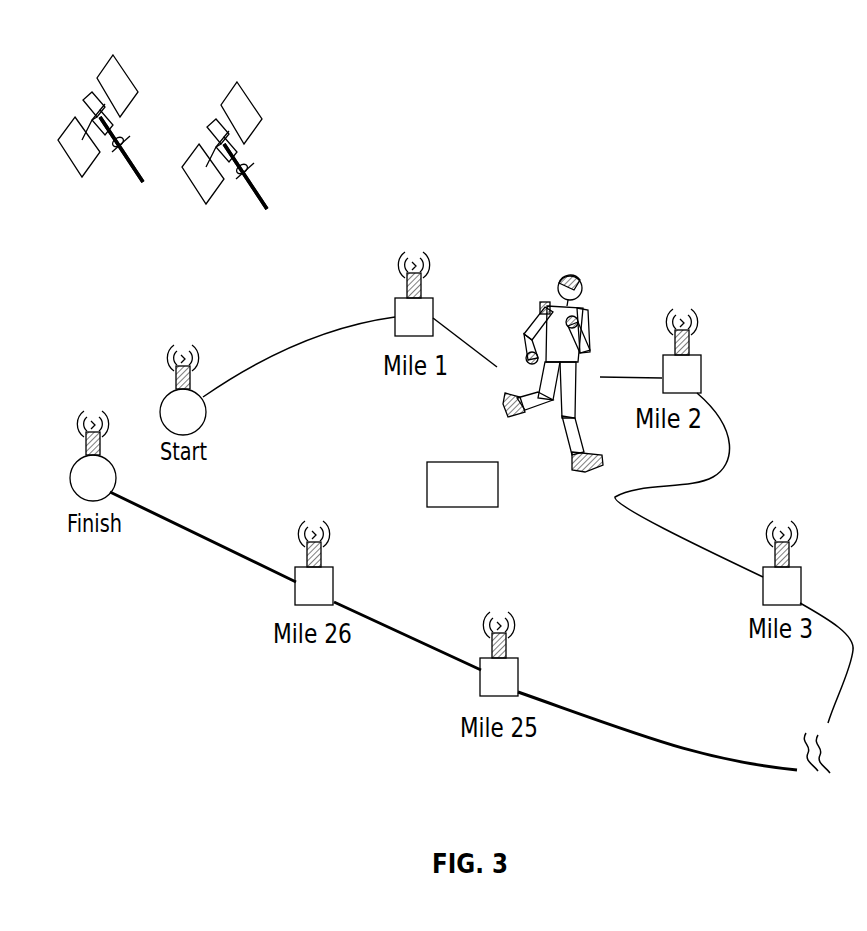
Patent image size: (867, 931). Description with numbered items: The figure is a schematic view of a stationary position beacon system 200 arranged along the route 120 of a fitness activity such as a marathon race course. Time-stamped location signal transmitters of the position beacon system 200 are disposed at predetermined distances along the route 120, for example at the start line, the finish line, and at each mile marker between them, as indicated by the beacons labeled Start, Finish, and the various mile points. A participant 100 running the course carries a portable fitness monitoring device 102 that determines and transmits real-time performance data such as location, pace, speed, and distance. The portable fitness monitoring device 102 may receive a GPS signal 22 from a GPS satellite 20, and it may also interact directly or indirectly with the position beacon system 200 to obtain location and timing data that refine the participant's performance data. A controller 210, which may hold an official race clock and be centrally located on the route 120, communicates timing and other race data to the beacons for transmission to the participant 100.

The GPS satellite 20 is at (125, 82).
The GPS signal 22 is at (123, 142).
The participant 100 is at (580, 273).
The portable fitness monitoring device 102 is at (547, 303).
The route 120 is at (195, 537).
The position beacon system 200 is at (413, 245).
The controller 210 is at (498, 488).